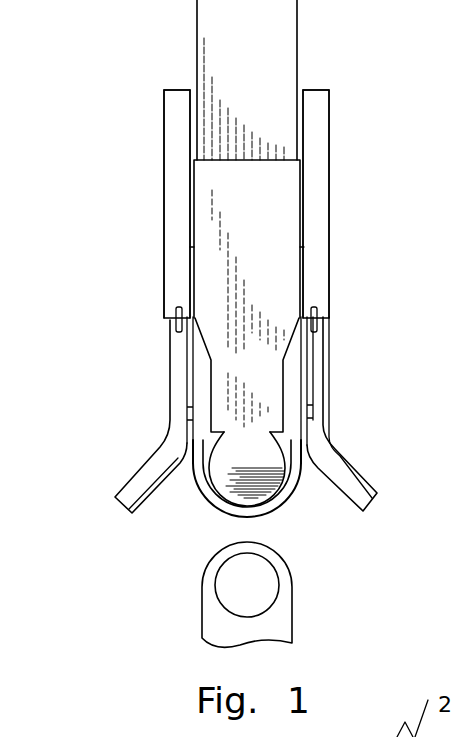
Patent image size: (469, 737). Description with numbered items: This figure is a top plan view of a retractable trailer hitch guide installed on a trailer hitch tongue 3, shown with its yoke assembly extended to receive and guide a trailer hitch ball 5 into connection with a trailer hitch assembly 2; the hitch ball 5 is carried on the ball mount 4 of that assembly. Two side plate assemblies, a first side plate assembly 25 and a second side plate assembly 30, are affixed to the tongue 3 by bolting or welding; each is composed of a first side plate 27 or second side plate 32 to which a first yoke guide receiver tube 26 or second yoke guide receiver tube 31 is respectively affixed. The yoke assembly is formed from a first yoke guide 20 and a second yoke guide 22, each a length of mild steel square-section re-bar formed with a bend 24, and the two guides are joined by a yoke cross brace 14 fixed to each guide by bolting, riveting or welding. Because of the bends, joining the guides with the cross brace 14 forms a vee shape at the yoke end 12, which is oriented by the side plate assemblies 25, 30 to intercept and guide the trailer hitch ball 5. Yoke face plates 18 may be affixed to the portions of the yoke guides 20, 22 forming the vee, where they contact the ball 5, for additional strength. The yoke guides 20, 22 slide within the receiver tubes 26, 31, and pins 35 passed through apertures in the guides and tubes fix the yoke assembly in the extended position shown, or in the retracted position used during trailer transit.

The trailer hitch assembly 2 is at (228, 384).
The trailer hitch tongue 3 is at (230, 42).
The ring holder 4 is at (298, 585).
The trailer hitch ball 5 is at (222, 588).
The yoke end 12 is at (187, 478).
The yoke cross brace 14 is at (326, 442).
The yoke face plates 18 is at (143, 502).
The first yoke guide 20 is at (176, 358).
The second yoke guide 22 is at (315, 382).
The bend 24 is at (328, 446).
The first side plate assembly 25 is at (150, 152).
The first yoke guide receiver tube 26 is at (175, 283).
The first side plate 27 is at (197, 90).
The second side plate assembly 30 is at (332, 153).
The second yoke guide receiver tube 31 is at (317, 223).
The second side plate 32 is at (302, 90).
The pins 35 is at (176, 321).